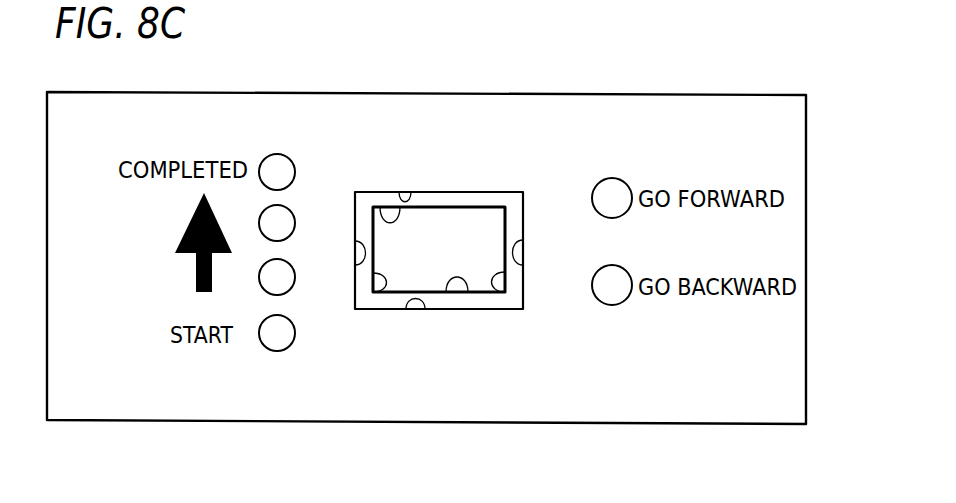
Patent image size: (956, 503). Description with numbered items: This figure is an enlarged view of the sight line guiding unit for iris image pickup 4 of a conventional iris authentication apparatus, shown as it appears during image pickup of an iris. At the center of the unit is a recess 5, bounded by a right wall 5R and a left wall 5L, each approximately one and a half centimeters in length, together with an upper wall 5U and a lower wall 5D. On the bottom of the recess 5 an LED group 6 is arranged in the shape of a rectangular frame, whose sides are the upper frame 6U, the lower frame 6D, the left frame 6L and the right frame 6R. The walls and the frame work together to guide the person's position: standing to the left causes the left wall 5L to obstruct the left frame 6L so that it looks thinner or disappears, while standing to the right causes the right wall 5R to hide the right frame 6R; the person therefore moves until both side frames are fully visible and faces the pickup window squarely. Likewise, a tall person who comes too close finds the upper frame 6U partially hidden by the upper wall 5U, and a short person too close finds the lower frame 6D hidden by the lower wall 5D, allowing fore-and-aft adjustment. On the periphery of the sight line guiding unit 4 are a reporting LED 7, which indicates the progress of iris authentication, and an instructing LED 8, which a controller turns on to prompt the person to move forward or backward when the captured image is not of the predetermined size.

The sight line guiding unit for iris image pickup 4 is at (539, 148).
The recess 5 is at (474, 232).
The upper wall 5U is at (405, 194).
The lower wall 5D is at (423, 309).
The left wall 5L is at (360, 261).
The right wall 5R is at (523, 259).
The LED group 6 is at (438, 188).
The upper frame 6U is at (386, 216).
The lower frame 6D is at (462, 292).
The left frame 6L is at (383, 290).
The right frame 6R is at (493, 292).
The reporting LED 7 is at (293, 212).
The instructing LED 8 is at (600, 278).